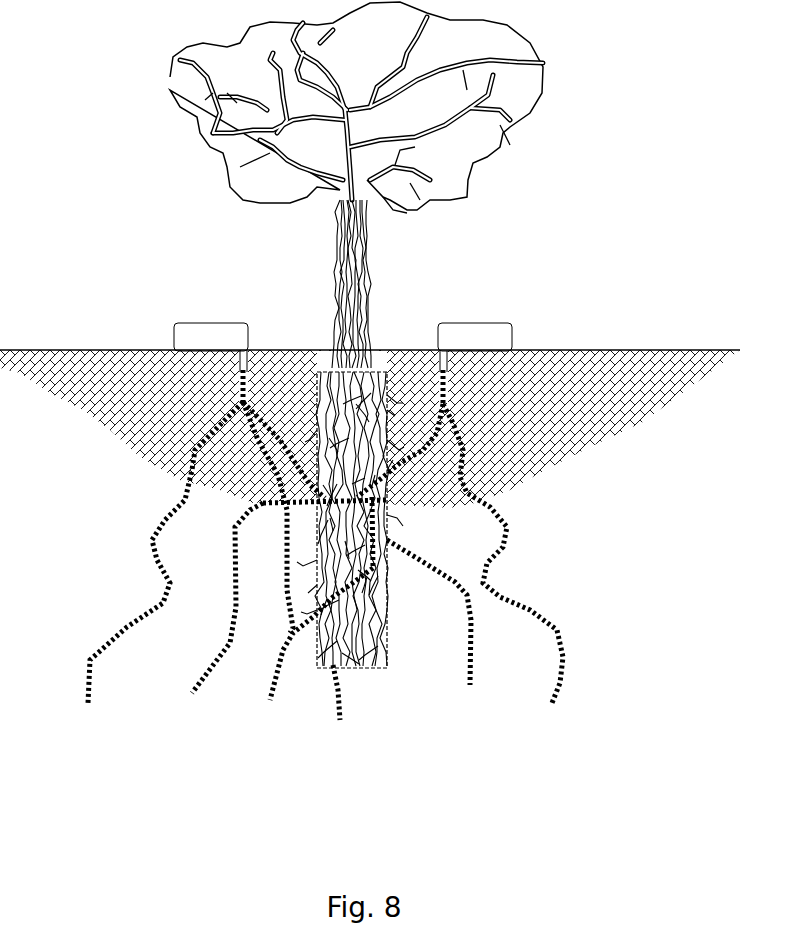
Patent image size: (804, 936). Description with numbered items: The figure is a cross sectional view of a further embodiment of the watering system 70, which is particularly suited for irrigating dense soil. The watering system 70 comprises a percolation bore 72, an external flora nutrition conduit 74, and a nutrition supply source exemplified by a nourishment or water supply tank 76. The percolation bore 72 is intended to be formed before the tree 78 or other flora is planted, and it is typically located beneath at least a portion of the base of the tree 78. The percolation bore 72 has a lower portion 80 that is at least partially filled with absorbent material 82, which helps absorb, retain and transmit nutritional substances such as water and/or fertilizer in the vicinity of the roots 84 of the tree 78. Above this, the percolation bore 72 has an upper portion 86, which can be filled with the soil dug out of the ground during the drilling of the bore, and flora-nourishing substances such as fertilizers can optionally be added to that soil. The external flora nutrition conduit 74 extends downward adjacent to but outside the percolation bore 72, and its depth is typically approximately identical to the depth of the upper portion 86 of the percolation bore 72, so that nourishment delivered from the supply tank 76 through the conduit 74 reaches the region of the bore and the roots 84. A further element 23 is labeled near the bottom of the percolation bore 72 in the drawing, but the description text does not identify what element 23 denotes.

The watering system 70 is at (278, 300).
The nourishment or water supply tank 76 is at (178, 325).
The external flora nutrition conduit 74 is at (448, 360).
The tree 78 is at (362, 292).
The upper portion 86 is at (387, 355).
The root ball / soil mass 23 is at (385, 670).
The lower portion 80 is at (317, 552).
The absorbent material 82 is at (337, 630).
The roots 84 is at (387, 515).
The percolation bore 72 is at (408, 607).